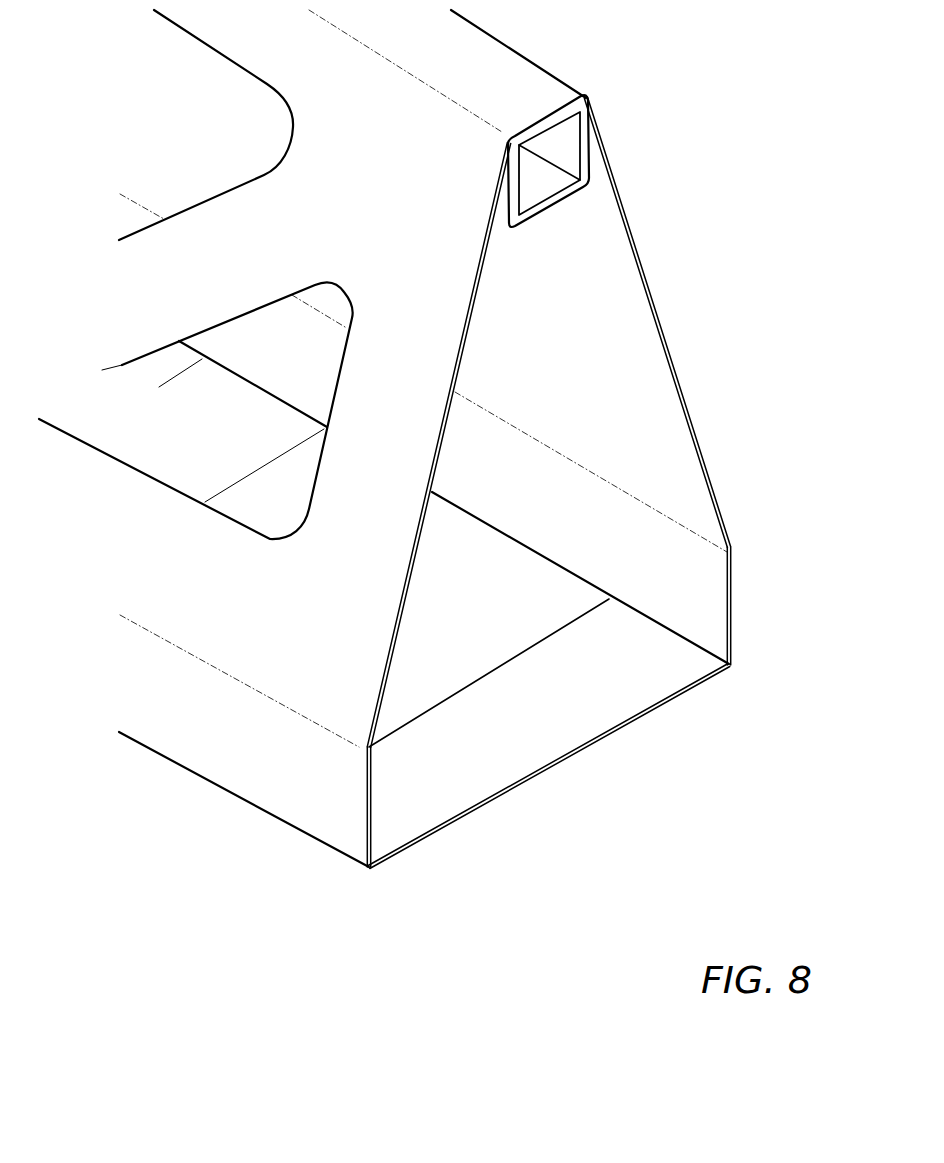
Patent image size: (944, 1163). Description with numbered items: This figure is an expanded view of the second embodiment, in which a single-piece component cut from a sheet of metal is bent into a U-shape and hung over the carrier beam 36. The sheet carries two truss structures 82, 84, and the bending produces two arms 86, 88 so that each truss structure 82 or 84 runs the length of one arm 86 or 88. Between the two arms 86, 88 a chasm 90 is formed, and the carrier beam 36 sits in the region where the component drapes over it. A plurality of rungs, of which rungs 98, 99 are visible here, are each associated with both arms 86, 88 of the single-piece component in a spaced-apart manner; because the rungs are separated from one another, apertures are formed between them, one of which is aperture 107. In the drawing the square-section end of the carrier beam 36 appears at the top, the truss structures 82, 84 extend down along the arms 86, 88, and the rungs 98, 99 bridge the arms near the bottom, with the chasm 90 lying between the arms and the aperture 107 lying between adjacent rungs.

The carrier beam 36 is at (575, 143).
The truss structure 82 is at (343, 668).
The truss structure 84 is at (622, 295).
The arm 86 is at (480, 257).
The arm 88 is at (617, 192).
The chasm 90 is at (570, 402).
The rung 98 is at (183, 462).
The rung 99 is at (633, 678).
The aperture 107 is at (445, 640).